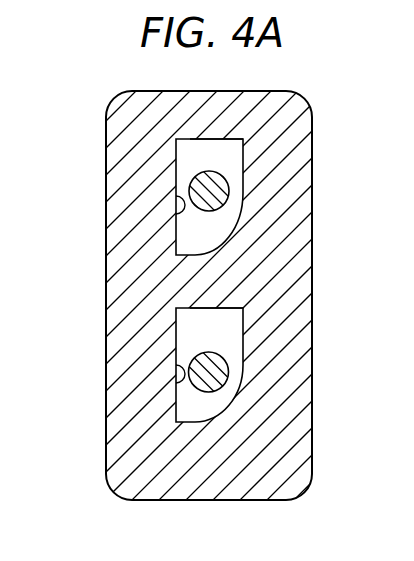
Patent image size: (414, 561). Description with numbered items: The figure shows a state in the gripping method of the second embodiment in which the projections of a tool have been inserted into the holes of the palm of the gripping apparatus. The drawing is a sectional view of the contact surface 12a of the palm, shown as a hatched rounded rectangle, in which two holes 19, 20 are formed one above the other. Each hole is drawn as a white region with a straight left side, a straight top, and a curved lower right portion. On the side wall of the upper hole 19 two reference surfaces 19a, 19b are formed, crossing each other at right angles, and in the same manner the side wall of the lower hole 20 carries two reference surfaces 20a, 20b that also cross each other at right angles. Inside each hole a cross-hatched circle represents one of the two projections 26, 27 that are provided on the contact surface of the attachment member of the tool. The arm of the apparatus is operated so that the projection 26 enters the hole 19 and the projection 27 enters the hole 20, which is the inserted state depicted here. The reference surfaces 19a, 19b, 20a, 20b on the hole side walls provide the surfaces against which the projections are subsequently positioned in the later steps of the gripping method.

The contact surface 12a is at (288, 112).
The hole 19 is at (192, 234).
The reference surface 19a is at (182, 213).
The reference surface 19b is at (212, 139).
The projection 26 is at (220, 174).
The hole 20 is at (190, 412).
The reference surface 20a is at (182, 381).
The reference surface 20b is at (200, 308).
The projection 27 is at (217, 352).